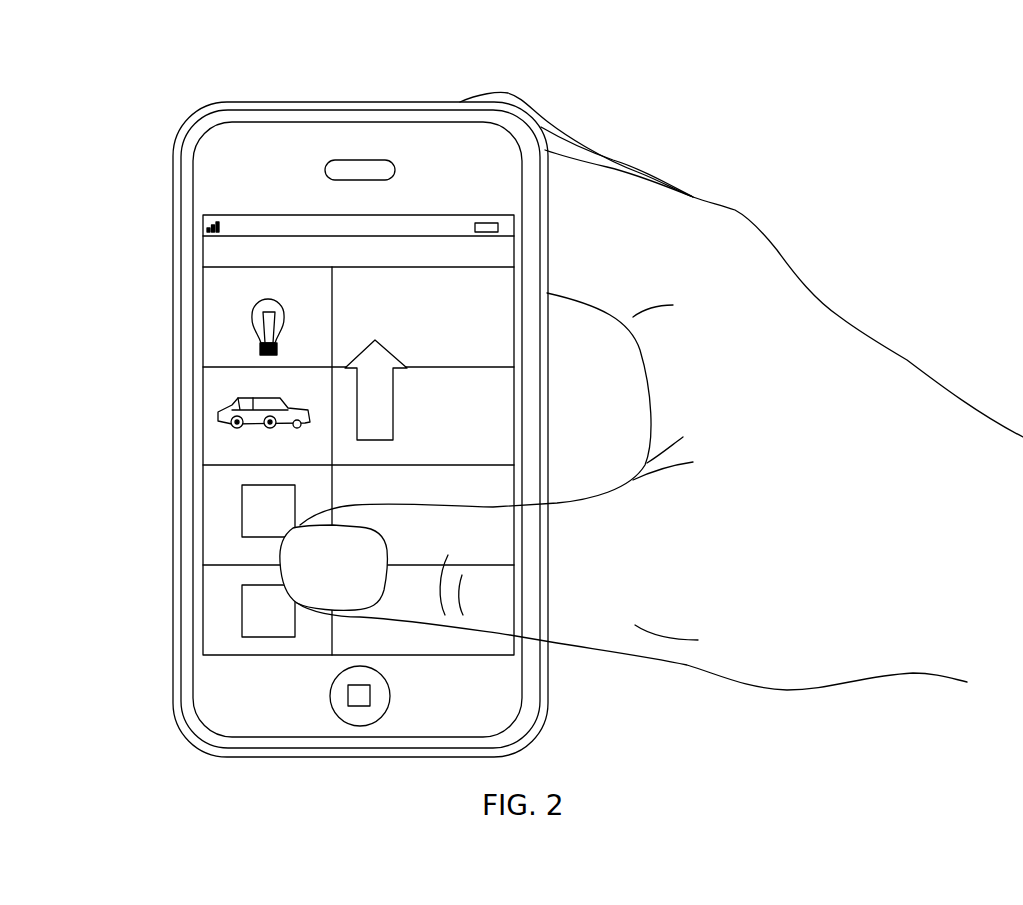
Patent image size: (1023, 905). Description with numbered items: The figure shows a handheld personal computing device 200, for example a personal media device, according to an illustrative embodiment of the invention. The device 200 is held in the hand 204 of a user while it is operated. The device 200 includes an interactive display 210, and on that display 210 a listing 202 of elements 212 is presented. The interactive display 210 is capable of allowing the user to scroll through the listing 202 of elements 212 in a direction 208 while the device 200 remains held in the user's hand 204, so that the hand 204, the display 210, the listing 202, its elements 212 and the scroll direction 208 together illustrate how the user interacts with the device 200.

The handheld personal computing device 200 is at (318, 101).
The listing 202 is at (157, 269).
The hand 204 is at (907, 360).
The direction 208 is at (370, 355).
The interactive display 210 is at (207, 277).
The element 212 is at (243, 632).